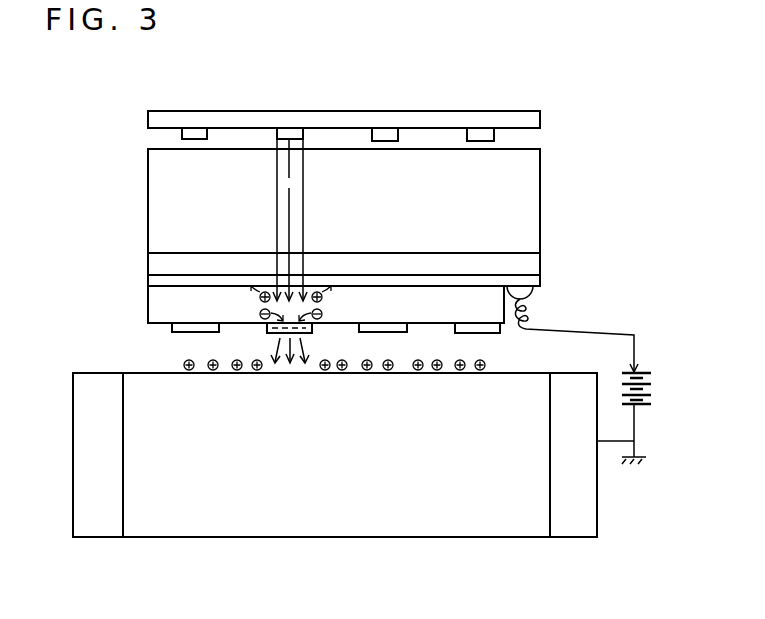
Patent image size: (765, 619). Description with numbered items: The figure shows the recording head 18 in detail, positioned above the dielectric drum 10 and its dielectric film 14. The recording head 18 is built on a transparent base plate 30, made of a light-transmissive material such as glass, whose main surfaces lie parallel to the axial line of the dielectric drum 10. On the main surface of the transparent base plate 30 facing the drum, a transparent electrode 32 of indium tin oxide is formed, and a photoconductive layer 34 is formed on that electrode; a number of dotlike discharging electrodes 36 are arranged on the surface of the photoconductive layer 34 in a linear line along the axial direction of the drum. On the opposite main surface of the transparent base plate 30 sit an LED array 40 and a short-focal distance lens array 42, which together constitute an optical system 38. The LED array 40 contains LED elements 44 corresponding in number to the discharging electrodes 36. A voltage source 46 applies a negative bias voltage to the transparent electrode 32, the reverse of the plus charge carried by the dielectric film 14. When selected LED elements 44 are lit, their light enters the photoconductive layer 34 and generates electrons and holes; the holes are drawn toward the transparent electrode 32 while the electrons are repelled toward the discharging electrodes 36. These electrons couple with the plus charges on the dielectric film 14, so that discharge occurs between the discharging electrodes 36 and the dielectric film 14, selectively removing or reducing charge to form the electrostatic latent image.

The dielectric drum 10 is at (395, 540).
The dielectric film 14 is at (515, 522).
The recording head 18 is at (630, 282).
The transparent base plate 30 is at (528, 267).
The transparent electrode 32 is at (152, 281).
The photoconductive layer 34 is at (155, 306).
The discharging electrodes 36 is at (178, 333).
The optical system 38 is at (131, 213).
The LED array 40 is at (532, 120).
The short-focal distance lens array 42 is at (520, 178).
The LED elements 44 is at (197, 129).
The voltage source 46 is at (644, 368).